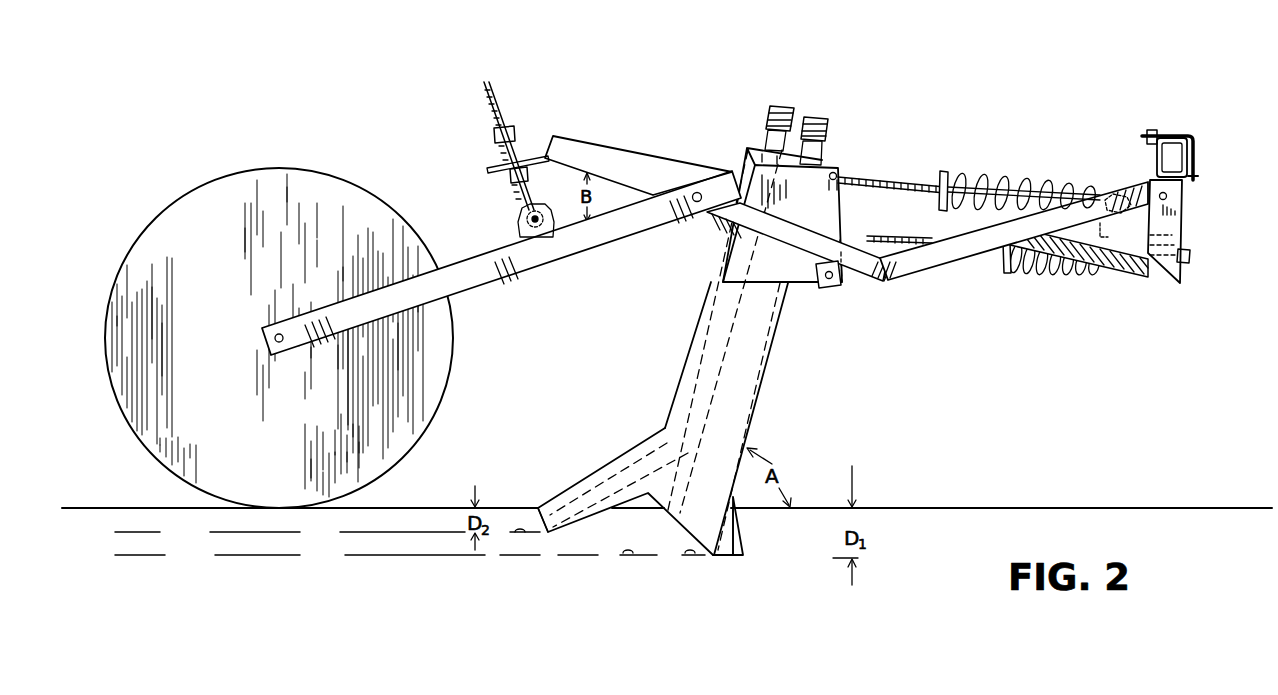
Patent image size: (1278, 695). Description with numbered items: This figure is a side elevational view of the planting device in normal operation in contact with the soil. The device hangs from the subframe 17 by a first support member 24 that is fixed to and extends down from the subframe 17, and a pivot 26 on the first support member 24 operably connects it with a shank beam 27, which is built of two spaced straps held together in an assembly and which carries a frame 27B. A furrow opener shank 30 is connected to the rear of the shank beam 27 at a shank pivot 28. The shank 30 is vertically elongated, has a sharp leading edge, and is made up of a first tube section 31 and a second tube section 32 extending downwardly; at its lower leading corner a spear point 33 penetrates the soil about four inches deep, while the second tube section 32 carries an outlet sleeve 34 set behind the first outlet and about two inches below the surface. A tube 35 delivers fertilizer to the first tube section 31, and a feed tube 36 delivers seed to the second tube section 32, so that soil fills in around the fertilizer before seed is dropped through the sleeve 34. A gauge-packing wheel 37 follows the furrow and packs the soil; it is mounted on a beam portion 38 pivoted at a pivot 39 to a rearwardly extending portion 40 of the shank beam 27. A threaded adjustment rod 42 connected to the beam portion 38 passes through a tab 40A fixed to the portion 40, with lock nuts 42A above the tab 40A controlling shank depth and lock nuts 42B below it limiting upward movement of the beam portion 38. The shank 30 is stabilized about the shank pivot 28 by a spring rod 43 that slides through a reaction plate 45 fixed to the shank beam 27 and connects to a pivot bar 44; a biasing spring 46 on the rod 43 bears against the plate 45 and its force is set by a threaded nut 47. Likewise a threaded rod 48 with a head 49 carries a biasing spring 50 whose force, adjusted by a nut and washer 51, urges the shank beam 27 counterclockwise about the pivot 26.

The subframe 17 is at (1172, 150).
The first support member 24 is at (1168, 221).
The pivot 26 is at (1168, 197).
The shank beam 27 is at (1142, 190).
The frame 27B is at (1117, 240).
The shank pivot 28 is at (840, 285).
The furrow opener shank 30 is at (812, 183).
The first tube section 31 is at (745, 402).
The second tube section 32 is at (703, 345).
The spear point 33 is at (727, 556).
The outlet sleeve 34 is at (538, 533).
The tube 35 is at (822, 117).
The feed tube 36 is at (783, 106).
The gauge-packing wheel 37 is at (284, 168).
The beam portion 38 is at (478, 255).
The pivot 39 is at (697, 192).
The rearwardly extending portion 40 is at (582, 144).
The tab 40A is at (530, 160).
The threaded adjustment rod 42 is at (492, 87).
The lock nuts 42A is at (496, 134).
The lock nuts 42B is at (511, 176).
The spring rod 43 is at (907, 180).
The pivot bar 44 is at (842, 177).
The reaction plate 45 is at (1126, 182).
The biasing spring 46 is at (1030, 176).
The threaded nut 47 is at (940, 197).
The threaded rod 48 is at (892, 236).
The head 49 is at (1188, 260).
The biasing spring 50 is at (1062, 270).
The nut and washer 51 is at (1008, 262).